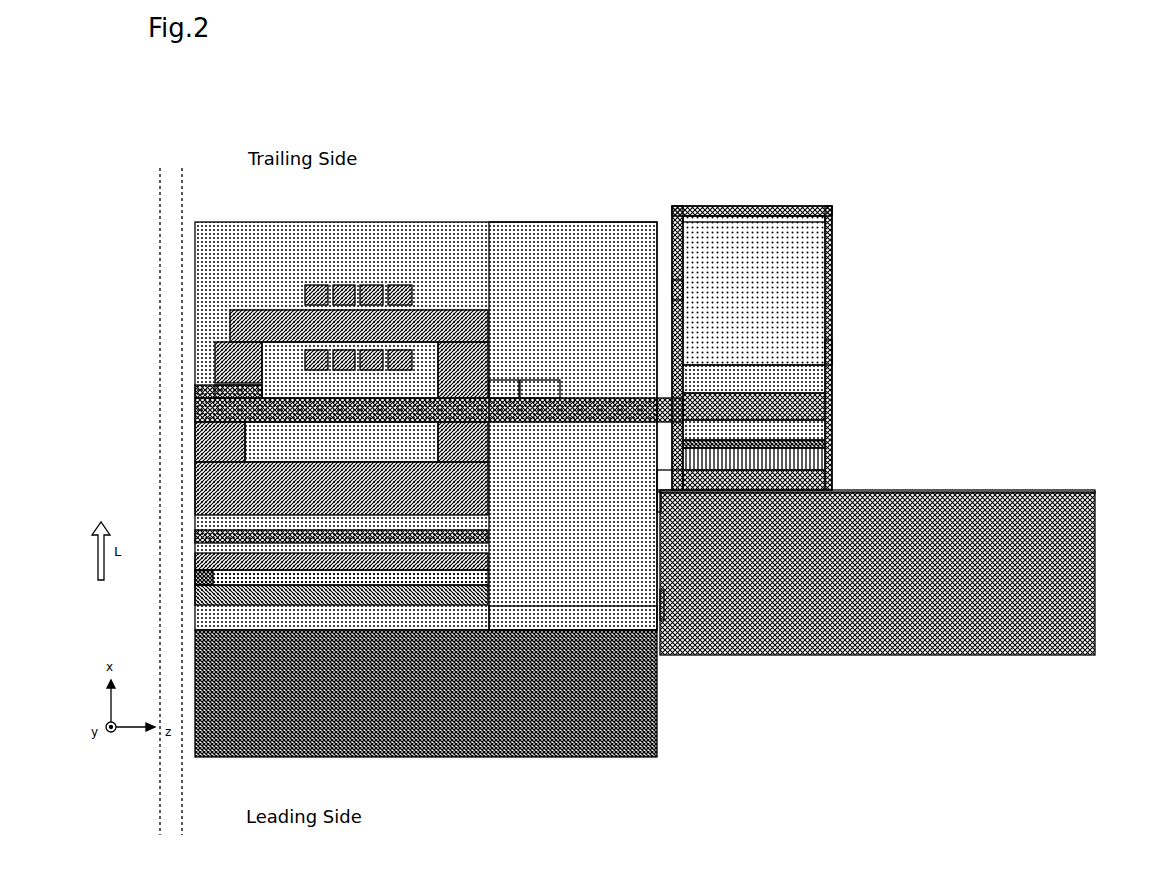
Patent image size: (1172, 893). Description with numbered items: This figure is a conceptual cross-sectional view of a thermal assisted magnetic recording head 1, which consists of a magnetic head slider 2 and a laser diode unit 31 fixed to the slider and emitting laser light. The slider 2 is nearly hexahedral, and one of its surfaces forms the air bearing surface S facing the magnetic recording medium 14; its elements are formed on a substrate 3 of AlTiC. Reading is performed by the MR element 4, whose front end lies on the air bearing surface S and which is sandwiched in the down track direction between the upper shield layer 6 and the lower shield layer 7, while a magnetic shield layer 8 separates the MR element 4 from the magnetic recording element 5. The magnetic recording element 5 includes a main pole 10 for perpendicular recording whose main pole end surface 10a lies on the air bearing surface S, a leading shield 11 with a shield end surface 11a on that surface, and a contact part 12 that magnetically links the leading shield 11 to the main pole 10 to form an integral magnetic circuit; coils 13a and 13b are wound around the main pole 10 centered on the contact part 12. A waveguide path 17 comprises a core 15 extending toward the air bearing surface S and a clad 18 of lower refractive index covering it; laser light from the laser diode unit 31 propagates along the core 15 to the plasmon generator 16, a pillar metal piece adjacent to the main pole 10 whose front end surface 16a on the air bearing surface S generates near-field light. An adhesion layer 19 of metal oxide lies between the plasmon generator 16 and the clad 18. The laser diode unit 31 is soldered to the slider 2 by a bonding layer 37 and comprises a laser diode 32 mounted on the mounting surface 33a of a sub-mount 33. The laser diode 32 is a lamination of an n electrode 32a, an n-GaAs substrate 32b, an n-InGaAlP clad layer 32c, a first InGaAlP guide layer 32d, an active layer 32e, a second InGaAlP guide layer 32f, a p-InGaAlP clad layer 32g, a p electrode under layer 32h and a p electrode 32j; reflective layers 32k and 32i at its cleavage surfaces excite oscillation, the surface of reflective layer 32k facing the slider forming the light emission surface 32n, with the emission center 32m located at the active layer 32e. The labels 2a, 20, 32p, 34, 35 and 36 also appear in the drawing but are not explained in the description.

The magnetic head 1 is at (525, 98).
The magnetic head slider 2 is at (425, 215).
The insulating layer 2a is at (573, 426).
The substrate 3 is at (657, 683).
The MR element 4 is at (195, 578).
The magnetic recording element 5 is at (120, 400).
The upper shield layer 6 is at (195, 560).
The lower shield layer 7 is at (195, 596).
The magnetic shield layer 8 is at (195, 536).
The main pole 10 is at (205, 335).
The main pole end surface 10a is at (195, 385).
The leading shield 11 is at (180, 442).
The shield end surface 11a is at (195, 462).
The contact part 12 is at (495, 318).
The coil 13a is at (330, 285).
The coil 13b is at (290, 312).
The magnetic recording medium 14 is at (162, 232).
The core 15 is at (341, 442).
The plasmon generator 16 is at (520, 386).
The front end surface 16a is at (200, 395).
The waveguide path 17 is at (555, 386).
The clad 18 is at (423, 370).
The adhesion layer 19 is at (215, 410).
The heat sink 20 is at (245, 395).
The laser diode unit 31 is at (812, 183).
The laser diode 32 is at (893, 302).
The n electrode 32a is at (834, 208).
The n-GaAs substrate 32b is at (833, 280).
The n-InGaAlP clad layer 32c is at (833, 358).
The first InGaAlP guide layer 32d is at (833, 372).
The active layer 32e is at (833, 395).
The second InGaAlP guide layer 32f is at (833, 428).
The p-InGaAlP clad layer 32g is at (833, 442).
The p electrode under layer 32h is at (833, 452).
The reflective layer 32i is at (833, 260).
The p electrode 32j is at (833, 468).
The reflective layer 32k is at (672, 208).
The emission center 32m is at (649, 400).
The light emission surface 32n is at (672, 290).
The cap layer 32p is at (766, 206).
The sub-mount 33 is at (1096, 582).
The mounting surface 33a is at (1010, 492).
The boundary 34 is at (653, 503).
The lower shield 35 is at (654, 490).
The insulating layer 36 is at (548, 630).
The bonding layer 37 is at (662, 600).
The air bearing surface S is at (183, 745).